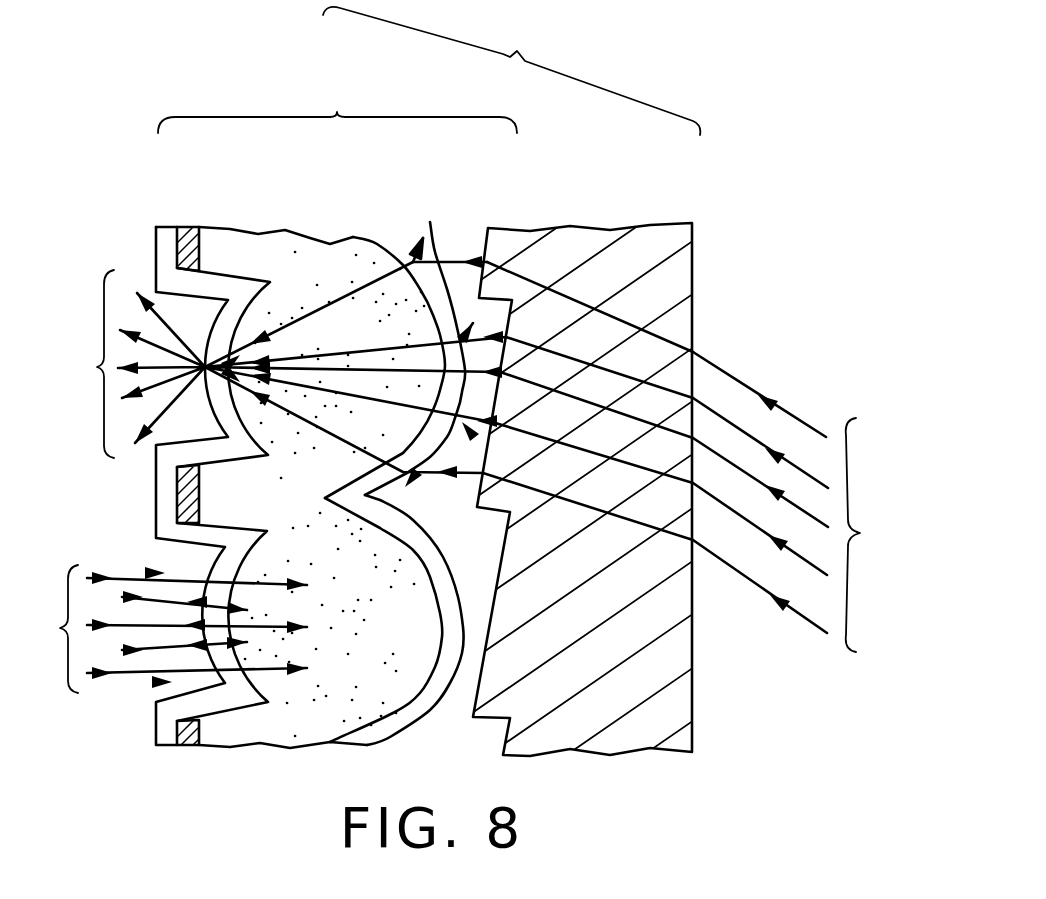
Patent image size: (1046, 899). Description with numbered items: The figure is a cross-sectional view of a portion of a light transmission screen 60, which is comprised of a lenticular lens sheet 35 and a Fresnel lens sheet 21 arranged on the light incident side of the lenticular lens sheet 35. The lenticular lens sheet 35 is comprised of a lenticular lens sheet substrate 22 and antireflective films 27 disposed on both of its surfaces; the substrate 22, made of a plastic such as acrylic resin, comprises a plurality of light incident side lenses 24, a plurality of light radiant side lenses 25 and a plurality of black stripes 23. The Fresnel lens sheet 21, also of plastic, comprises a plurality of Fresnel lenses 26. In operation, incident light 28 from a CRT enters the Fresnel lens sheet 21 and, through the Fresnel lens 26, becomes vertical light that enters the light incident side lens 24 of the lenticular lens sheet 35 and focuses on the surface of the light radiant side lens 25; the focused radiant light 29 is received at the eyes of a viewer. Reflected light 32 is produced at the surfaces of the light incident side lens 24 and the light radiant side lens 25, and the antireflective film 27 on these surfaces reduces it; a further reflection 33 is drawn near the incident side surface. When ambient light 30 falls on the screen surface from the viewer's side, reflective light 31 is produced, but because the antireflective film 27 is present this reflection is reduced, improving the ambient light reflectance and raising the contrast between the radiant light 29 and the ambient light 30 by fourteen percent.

The Fresnel lens sheet 21 is at (600, 245).
The lenticular lens sheet substrate 22 is at (274, 245).
The black stripes 23 is at (190, 230).
The light incident side lens 24 is at (366, 252).
The light radiant side lens 25 is at (272, 312).
The Fresnel lens 26 is at (508, 240).
The antireflective film 27 is at (166, 230).
The incident light 28 is at (554, 454).
The radiant light 29 is at (126, 364).
The ambient light 30 is at (160, 629).
The reflective light 31 is at (150, 573).
The reflected light 32 is at (262, 378).
The reflected light 33 is at (465, 258).
The lenticular lens sheet 35 is at (337, 101).
The light transmission screen 60 is at (552, 42).